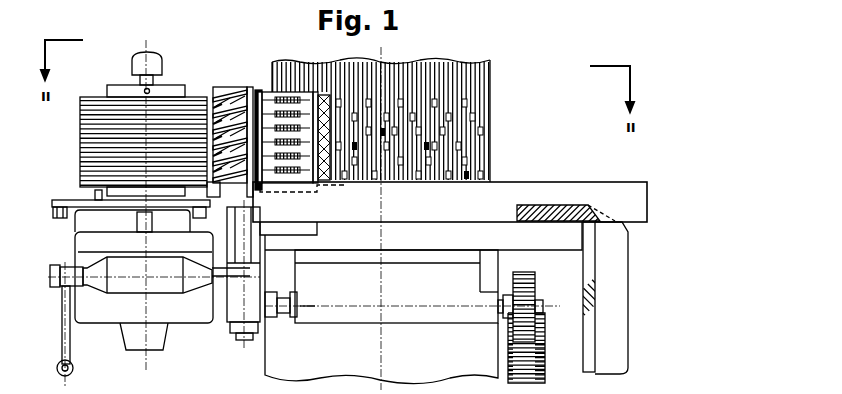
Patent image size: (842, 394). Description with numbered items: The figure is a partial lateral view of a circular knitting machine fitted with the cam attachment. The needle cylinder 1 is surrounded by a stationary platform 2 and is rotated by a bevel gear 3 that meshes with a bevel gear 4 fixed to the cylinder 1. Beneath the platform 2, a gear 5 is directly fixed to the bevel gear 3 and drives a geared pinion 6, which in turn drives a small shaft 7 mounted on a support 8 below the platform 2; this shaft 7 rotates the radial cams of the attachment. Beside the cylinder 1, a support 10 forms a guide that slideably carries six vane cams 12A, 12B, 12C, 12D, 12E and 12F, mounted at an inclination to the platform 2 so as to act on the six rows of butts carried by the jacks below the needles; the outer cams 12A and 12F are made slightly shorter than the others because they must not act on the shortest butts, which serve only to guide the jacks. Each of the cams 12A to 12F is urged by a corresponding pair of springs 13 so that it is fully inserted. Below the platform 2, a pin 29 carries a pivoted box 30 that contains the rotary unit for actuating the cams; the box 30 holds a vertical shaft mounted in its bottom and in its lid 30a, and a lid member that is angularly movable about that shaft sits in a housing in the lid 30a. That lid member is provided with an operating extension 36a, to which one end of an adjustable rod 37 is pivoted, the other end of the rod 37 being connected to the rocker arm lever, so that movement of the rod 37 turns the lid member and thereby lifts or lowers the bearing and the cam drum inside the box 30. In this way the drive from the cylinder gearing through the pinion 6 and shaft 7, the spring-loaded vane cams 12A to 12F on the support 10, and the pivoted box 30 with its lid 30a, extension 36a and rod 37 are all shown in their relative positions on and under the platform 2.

The needle cylinder 1 is at (485, 80).
The stationary platform 2 is at (532, 190).
The bevel gear 3 is at (583, 280).
The bevel gear 4 is at (576, 204).
The gear 5 is at (536, 363).
The geared pinion 6 is at (527, 274).
The small shaft 7 is at (281, 318).
The support 8 is at (339, 328).
The support 10 is at (247, 90).
The vane cam 12A is at (240, 176).
The vane cam 12B is at (247, 166).
The vane cam 12C is at (217, 125).
The vane cam 12D is at (262, 90).
The vane cam 12E is at (229, 106).
The vane cam 12F is at (238, 92).
The pair of springs 13 is at (289, 163).
The pin 29 is at (240, 333).
The box 30 is at (191, 314).
The lid 30a is at (88, 238).
The operating extension 36a is at (80, 199).
The adjustable rod 37 is at (62, 218).